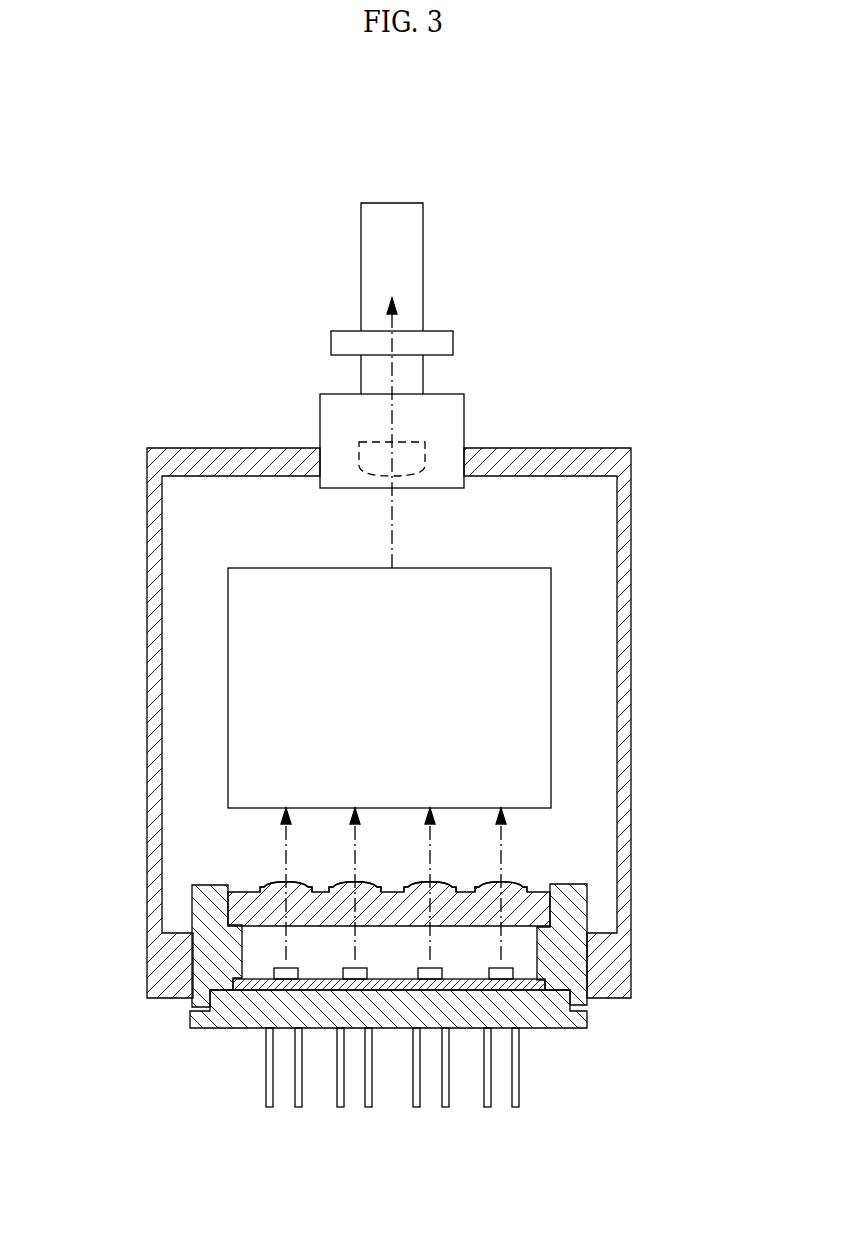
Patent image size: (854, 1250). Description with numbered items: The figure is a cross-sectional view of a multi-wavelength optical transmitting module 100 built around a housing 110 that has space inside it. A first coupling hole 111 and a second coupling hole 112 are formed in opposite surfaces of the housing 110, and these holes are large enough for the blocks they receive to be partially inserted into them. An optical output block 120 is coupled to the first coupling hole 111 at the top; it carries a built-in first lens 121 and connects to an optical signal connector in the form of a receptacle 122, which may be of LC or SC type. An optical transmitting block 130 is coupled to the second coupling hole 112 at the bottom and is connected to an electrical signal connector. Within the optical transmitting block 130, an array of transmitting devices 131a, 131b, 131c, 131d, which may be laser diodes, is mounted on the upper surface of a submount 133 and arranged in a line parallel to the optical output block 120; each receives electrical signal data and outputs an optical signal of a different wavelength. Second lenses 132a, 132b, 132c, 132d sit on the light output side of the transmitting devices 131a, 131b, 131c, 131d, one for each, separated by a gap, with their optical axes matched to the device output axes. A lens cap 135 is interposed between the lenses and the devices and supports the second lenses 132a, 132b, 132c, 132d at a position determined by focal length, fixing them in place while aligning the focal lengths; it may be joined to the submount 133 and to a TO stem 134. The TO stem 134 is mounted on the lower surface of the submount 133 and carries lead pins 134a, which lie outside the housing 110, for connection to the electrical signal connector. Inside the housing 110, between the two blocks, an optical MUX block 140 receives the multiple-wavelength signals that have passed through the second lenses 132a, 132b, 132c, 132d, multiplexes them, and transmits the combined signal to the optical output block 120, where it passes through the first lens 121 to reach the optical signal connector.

The multi-wavelength optical transmitting module 100 is at (78, 181).
The housing 110 is at (155, 514).
The first coupling hole 111 is at (318, 462).
The second coupling hole 112 is at (590, 968).
The optical output block 120 is at (309, 233).
The first lens 121 is at (420, 441).
The receptacle 122 is at (423, 237).
The optical transmitting block 130 is at (605, 1051).
The transmitting device 131a is at (286, 976).
The transmitting device 131b is at (345, 976).
The transmitting device 131c is at (441, 976).
The transmitting device 131d is at (512, 978).
The second lens 132a is at (277, 884).
The second lens 132b is at (343, 882).
The second lens 132c is at (437, 880).
The second lens 132d is at (512, 886).
The submount 133 is at (233, 982).
The TO stem 134 is at (190, 1018).
The lead pins 134a is at (265, 1102).
The lens cap 135 is at (578, 920).
The optical MUX block 140 is at (572, 695).